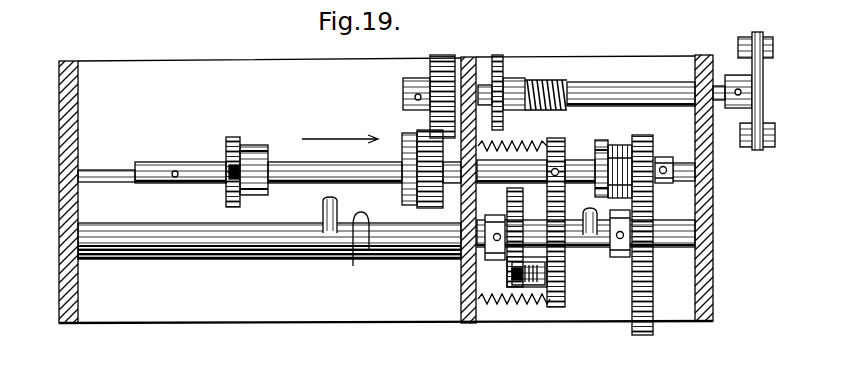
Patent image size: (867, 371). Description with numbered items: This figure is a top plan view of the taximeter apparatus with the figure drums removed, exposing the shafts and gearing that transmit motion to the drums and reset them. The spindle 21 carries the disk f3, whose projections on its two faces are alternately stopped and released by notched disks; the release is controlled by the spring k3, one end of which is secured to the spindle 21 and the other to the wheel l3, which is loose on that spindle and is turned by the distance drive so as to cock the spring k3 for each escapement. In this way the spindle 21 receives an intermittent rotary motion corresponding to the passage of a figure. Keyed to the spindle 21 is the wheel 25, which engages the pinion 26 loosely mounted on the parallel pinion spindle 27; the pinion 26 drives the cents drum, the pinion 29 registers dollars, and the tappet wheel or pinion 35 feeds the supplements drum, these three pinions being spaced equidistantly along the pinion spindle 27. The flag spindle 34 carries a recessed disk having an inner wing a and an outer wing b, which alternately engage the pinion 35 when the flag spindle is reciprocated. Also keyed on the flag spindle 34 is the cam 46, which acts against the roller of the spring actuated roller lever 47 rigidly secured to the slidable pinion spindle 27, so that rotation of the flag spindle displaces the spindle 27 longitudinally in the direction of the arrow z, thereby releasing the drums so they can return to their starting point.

The wheel 25 is at (444, 50).
The wheel l3 is at (500, 50).
The spring k3 is at (547, 80).
The spindle 21 is at (614, 84).
The disk f3 is at (752, 32).
The pinion 29 is at (234, 141).
The arrow z is at (340, 130).
The pinion spindle 27 is at (333, 168).
The pinion 26 is at (433, 208).
The tappet wheel or pinion 35 is at (601, 142).
The outer flange or wing b is at (642, 135).
The cam 46 is at (527, 237).
The roller lever 47 is at (562, 201).
The inner flange or wing a is at (640, 194).
The flag spindle 34 is at (385, 257).